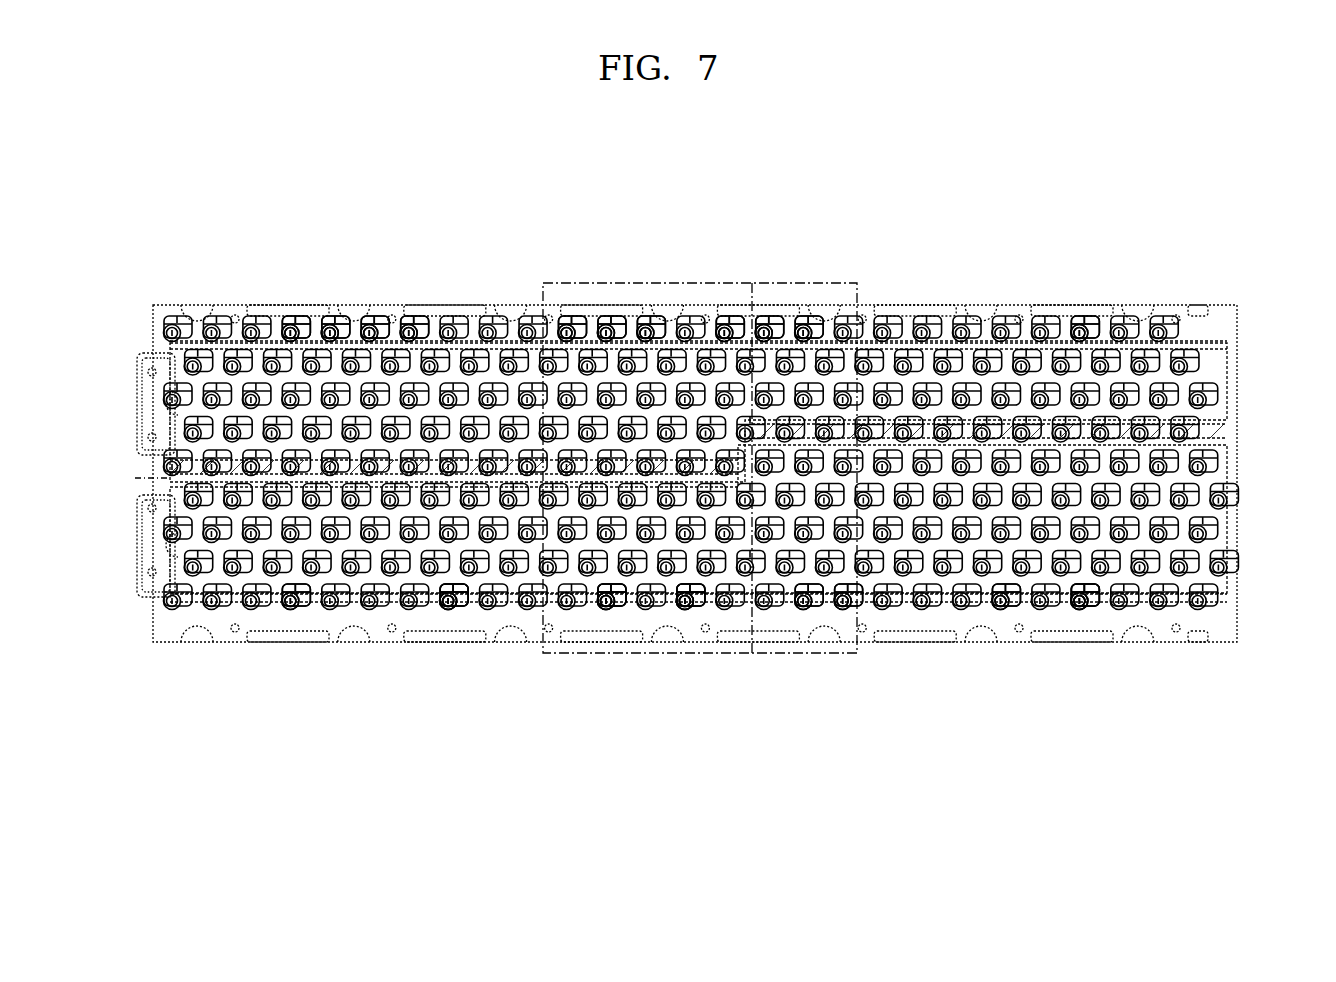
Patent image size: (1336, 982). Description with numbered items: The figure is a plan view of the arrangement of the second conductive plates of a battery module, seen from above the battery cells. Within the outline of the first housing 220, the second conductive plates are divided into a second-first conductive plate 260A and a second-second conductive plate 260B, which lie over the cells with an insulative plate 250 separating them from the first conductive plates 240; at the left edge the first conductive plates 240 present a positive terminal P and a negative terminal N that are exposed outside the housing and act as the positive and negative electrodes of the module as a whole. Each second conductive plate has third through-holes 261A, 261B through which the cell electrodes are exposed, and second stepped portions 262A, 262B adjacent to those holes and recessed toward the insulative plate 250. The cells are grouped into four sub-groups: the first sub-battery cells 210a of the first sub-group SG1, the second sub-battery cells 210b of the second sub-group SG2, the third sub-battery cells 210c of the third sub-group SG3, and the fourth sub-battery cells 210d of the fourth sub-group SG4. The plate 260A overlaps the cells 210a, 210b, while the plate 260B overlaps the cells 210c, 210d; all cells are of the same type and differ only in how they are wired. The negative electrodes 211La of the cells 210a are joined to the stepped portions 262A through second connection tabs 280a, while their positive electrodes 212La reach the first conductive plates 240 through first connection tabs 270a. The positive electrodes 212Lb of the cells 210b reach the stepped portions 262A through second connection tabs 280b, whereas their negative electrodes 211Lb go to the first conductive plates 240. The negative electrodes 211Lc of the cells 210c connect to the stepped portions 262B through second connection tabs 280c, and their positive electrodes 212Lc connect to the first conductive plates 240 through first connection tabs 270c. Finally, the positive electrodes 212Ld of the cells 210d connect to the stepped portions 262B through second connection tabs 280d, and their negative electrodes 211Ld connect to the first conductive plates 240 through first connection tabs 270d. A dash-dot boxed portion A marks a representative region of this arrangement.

The first housing 220 is at (168, 325).
The first conductive plates 240 is at (139, 475).
The positive terminal P is at (148, 430).
The negative terminal N is at (148, 520).
The insulative plate 250 is at (1230, 432).
The second-first conductive plate 260A is at (1215, 358).
The second-second conductive plate 260B is at (1215, 523).
The first bus bar 261A is at (292, 334).
The second bus bar 261B is at (690, 600).
The second stepped portions 262A is at (426, 334).
The second stepped portions 262B is at (670, 600).
The first connection tabs 270a is at (335, 330).
The first connection tabs 270c is at (1097, 610).
The first connection tabs 270d is at (458, 600).
The second connection tabs 280a is at (353, 334).
The second connection tabs 280b is at (803, 333).
The second connection tabs 280c is at (1092, 605).
The second connection tabs 280d is at (450, 605).
The first sub-battery cells 210a is at (562, 330).
The second sub-battery cells 210b is at (1083, 333).
The third sub-battery cells 210c is at (1000, 605).
The fourth sub-battery cells 210d is at (292, 600).
The negative electrodes 211La is at (642, 333).
The negative electrodes 211Lb is at (758, 333).
The negative electrodes 211Lc is at (830, 600).
The negative electrodes 211Ld is at (625, 600).
The positive electrodes 212La is at (606, 335).
The positive electrodes 212Lb is at (726, 333).
The positive electrodes 212Lc is at (810, 600).
The positive electrodes 212Ld is at (603, 600).
The region A is at (850, 652).
The first sub-group SG1 is at (497, 281).
The second sub-group SG2 is at (1152, 281).
The third sub-group SG3 is at (1152, 649).
The fourth sub-group SG4 is at (255, 650).